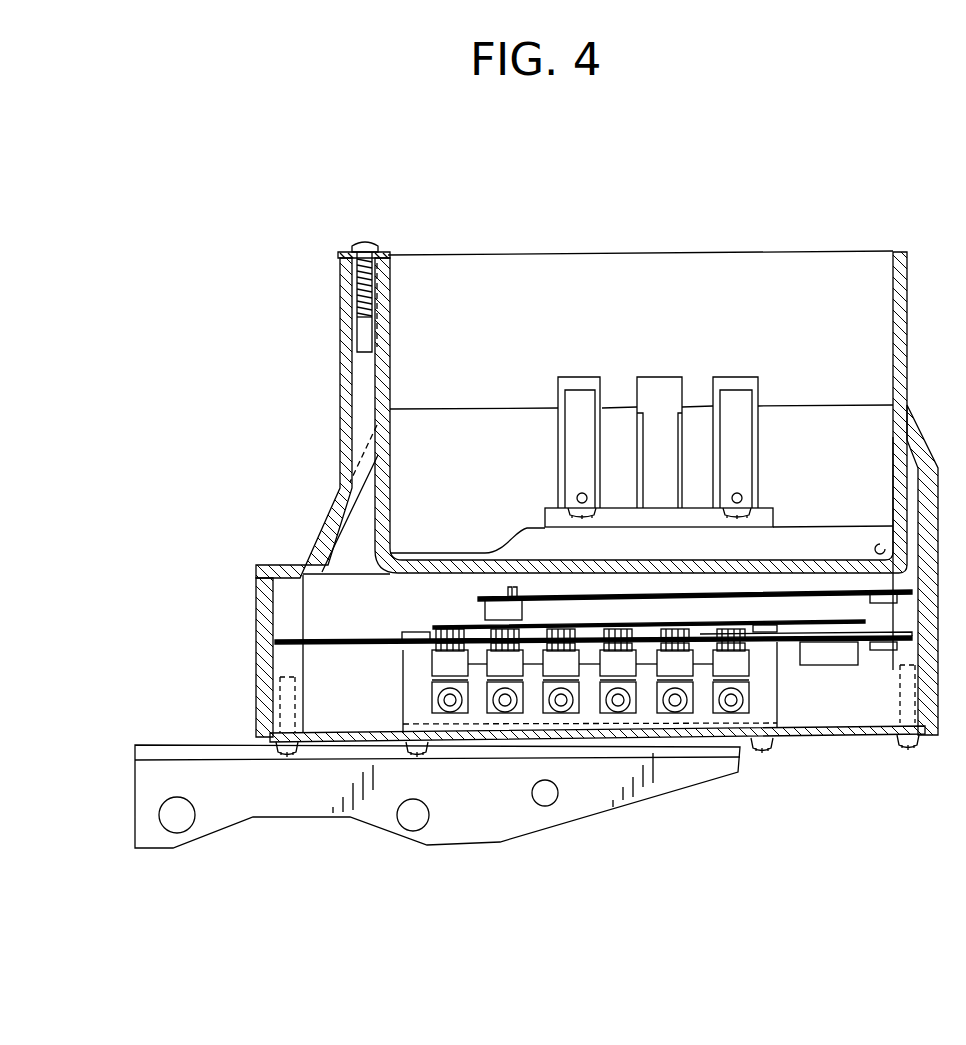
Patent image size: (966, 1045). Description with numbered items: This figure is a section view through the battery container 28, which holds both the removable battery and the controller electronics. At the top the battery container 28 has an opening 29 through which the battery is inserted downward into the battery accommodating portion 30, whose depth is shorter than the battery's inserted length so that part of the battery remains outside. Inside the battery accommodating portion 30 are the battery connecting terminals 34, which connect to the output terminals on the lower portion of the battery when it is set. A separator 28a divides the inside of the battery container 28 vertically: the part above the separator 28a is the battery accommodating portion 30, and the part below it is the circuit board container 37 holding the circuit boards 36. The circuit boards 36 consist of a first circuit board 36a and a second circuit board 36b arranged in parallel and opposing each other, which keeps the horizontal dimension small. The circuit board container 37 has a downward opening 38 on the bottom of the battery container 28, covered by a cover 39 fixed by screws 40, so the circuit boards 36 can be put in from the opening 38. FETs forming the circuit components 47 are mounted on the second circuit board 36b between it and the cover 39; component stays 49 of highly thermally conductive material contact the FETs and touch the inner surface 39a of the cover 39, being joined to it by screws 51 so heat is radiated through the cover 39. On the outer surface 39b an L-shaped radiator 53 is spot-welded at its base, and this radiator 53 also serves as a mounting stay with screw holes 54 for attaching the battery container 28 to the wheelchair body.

The battery container 28 is at (348, 208).
The separator 28a is at (447, 570).
The opening 29 is at (508, 252).
The battery accommodating portion 30 is at (472, 354).
The battery connecting terminals 34 is at (583, 415).
The circuit boards 36 is at (518, 602).
The first circuit board 36a is at (466, 596).
The second circuit board 36b is at (422, 618).
The circuit board container 37 is at (847, 709).
The opening 38 is at (340, 714).
The cover 39 is at (855, 733).
The inner surface 39a is at (387, 723).
The outer surface 39b is at (350, 745).
The screws 40 is at (276, 748).
The circuit components (FETs) 47 is at (478, 672).
The component stays 49 is at (773, 700).
The screws 51 is at (420, 757).
The radiator 53 is at (653, 785).
The screw holes 54 is at (163, 830).